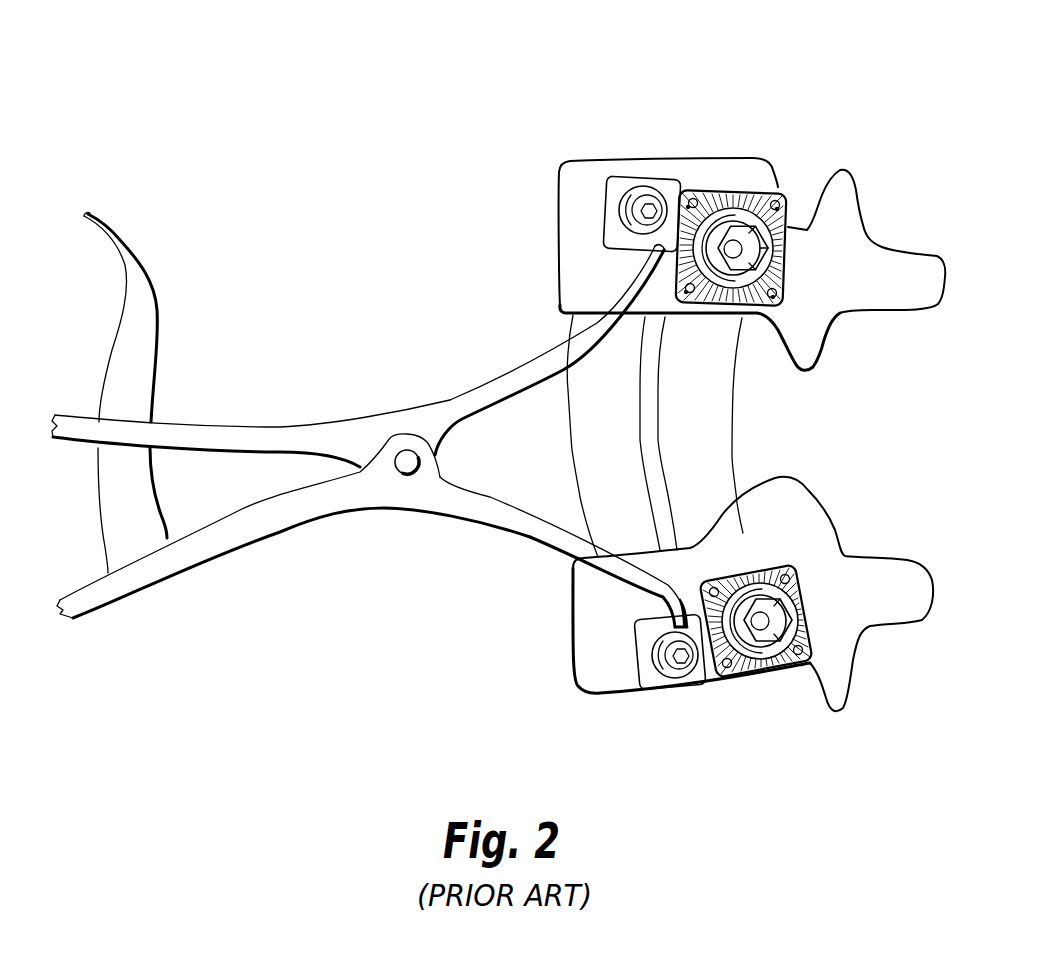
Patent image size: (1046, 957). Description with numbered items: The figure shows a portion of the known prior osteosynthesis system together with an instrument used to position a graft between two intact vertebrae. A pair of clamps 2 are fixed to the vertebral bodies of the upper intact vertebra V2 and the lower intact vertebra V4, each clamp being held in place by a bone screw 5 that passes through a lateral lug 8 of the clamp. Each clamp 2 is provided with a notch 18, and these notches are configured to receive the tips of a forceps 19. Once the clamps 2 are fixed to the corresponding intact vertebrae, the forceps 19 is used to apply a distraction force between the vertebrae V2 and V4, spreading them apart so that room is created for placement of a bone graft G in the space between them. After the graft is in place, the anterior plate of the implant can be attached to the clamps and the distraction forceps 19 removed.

The clamp 2 is at (714, 189).
The bone screw 5 is at (650, 208).
The lateral lug 8 is at (622, 182).
The notch 18 is at (648, 250).
The forceps 19 is at (386, 413).
The bone graft G is at (593, 438).
The intact vertebra V2 is at (752, 264).
The intact vertebra V4 is at (685, 62).